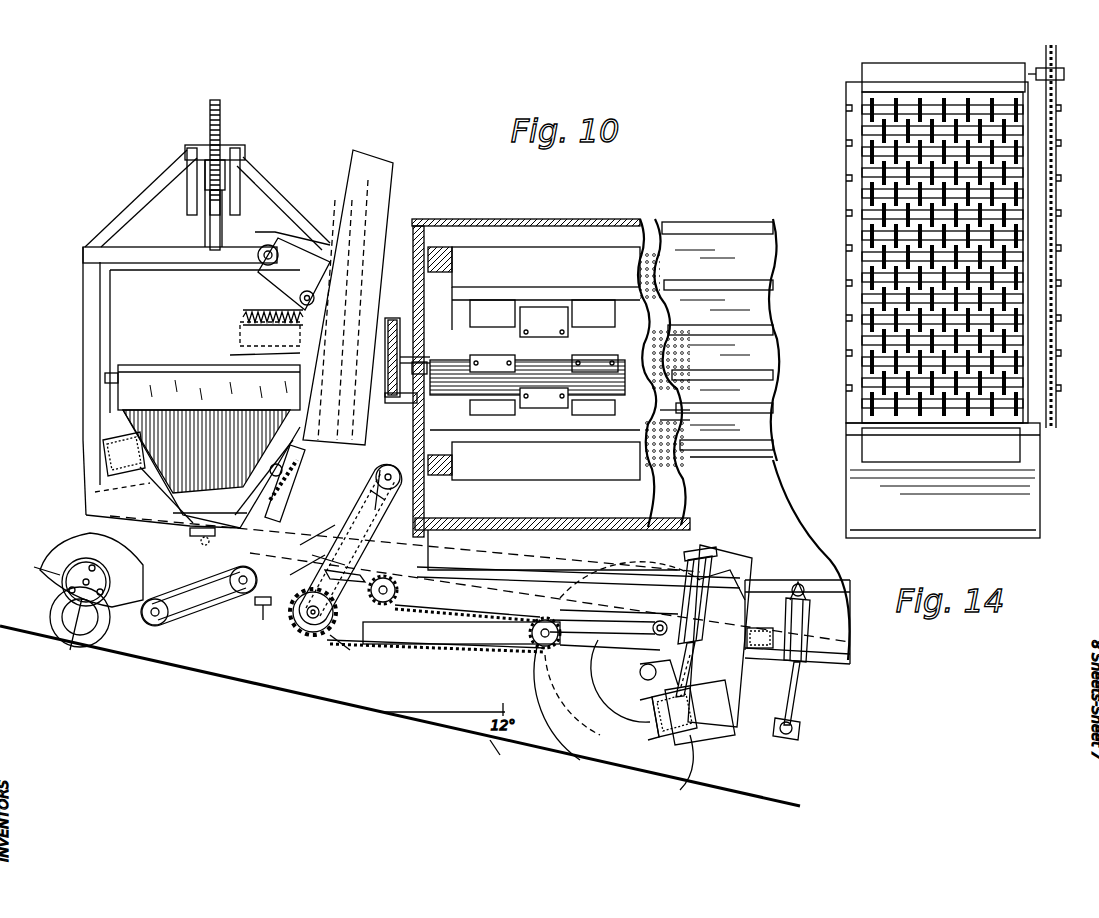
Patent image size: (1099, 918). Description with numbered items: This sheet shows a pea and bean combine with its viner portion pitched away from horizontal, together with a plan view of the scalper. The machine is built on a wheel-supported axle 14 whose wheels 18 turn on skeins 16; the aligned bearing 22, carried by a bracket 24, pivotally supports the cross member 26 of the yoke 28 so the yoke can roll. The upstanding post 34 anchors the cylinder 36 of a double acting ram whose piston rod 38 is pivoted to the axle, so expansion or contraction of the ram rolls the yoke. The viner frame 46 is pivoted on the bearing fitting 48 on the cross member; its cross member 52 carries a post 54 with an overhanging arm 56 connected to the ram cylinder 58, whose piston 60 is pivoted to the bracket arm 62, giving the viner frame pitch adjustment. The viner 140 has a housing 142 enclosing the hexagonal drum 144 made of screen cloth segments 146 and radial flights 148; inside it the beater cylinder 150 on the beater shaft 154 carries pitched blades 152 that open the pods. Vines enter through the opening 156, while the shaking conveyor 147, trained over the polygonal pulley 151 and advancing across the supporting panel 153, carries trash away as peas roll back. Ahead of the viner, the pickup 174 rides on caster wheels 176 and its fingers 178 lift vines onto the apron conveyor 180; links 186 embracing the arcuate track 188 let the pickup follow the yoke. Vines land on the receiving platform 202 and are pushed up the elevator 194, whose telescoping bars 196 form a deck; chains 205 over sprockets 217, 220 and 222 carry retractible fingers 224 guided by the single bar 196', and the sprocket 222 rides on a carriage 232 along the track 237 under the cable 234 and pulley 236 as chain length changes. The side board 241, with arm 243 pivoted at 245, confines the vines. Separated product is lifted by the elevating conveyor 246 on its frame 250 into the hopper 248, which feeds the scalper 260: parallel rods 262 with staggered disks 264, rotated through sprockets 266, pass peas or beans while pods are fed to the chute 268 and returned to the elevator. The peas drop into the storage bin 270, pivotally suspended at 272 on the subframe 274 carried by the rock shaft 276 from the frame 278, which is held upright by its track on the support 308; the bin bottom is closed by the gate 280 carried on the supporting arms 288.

In FIG. 10, the wheel-supported axle 14 is at (660, 737).
In FIG. 10, the skeins 16 is at (645, 675).
In FIG. 10, the wheels 18 is at (540, 684).
In FIG. 10, the aligned bearing 22 is at (725, 690).
In FIG. 10, the bracket 24 is at (715, 750).
In FIG. 10, the cross member 26 is at (700, 740).
In FIG. 10, the yoke 28 is at (108, 499).
In FIG. 10, the upstanding post 34 is at (725, 595).
In FIG. 10, the cylinder 36 is at (688, 590).
In FIG. 10, the piston rod 38 is at (659, 665).
In FIG. 10, the viner frame 46 is at (552, 604).
In FIG. 10, the bearing fitting 48 is at (700, 665).
In FIG. 10, the cross member 52 is at (806, 650).
In FIG. 10, the post 54 is at (775, 635).
In FIG. 10, the overhanging arm 56 is at (775, 580).
In FIG. 10, the ram cylinder 58 is at (804, 610).
In FIG. 10, the piston 60 is at (796, 690).
In FIG. 10, the bracket arm 62 is at (786, 736).
In FIG. 10, the viner 140 is at (760, 470).
In FIG. 10, the housing 142 is at (760, 305).
In FIG. 10, the drum 144 is at (500, 248).
In FIG. 10, the screen cloth segments 146 is at (530, 298).
In FIG. 10, the conveyor 147 is at (585, 518).
In FIG. 10, the radial flights 148 is at (570, 248).
In FIG. 10, the beater cylinder 150 is at (480, 335).
In FIG. 10, the polygonal pulley 151 is at (680, 455).
In FIG. 10, the blades 152 is at (600, 320).
In FIG. 10, the supporting panel 153 is at (612, 526).
In FIG. 10, the beater shaft 154 is at (420, 366).
In FIG. 10, the opening 156 is at (442, 436).
In FIG. 10, the pickup 174 is at (50, 592).
In FIG. 10, the caster wheels 176 is at (66, 630).
In FIG. 10, the fingers 178 is at (90, 560).
In FIG. 10, the apron conveyor 180 is at (170, 600).
In FIG. 10, the links 186 is at (330, 540).
In FIG. 10, the arcuate track 188 is at (340, 520).
In FIG. 10, the elevator 194 is at (272, 460).
In FIG. 10, the bar 196 is at (303, 550).
In FIG. 10, the single bar 196' is at (373, 506).
In FIG. 10, the receiving platform 202 is at (263, 606).
In FIG. 10, the chains 205 is at (340, 645).
In FIG. 10, the sprocket 217 is at (300, 628).
In FIG. 10, the sprocket 220 is at (385, 583).
In FIG. 10, the sprocket 222 is at (540, 620).
In FIG. 10, the retractible fingers 224 is at (312, 555).
In FIG. 10, the carriage 232 is at (568, 648).
In FIG. 10, the cable 234 is at (607, 620).
In FIG. 10, the pulley 236 is at (655, 636).
In FIG. 10, the track 237 is at (398, 632).
In FIG. 10, the side board 241 is at (355, 165).
In FIG. 10, the arm 243 is at (350, 575).
In FIG. 10, the pivot 245 is at (355, 632).
In FIG. 10, the elevating conveyor 246 is at (312, 290).
In FIG. 10, the hopper 248 is at (250, 285).
In FIG. 10, the frame 250 is at (290, 255).
In FIG. 10, the scalper 260 is at (243, 315).
In FIG. 14, the scalper 260 is at (846, 160).
In FIG. 10, the parallel rods 262 is at (243, 325).
In FIG. 14, the parallel rods 262 is at (862, 192).
In FIG. 10, the staggered disks 264 is at (260, 335).
In FIG. 14, the staggered disks 264 is at (862, 212).
In FIG. 14, the sprockets 266 is at (1058, 250).
In FIG. 10, the chute 268 is at (260, 358).
In FIG. 14, the chute 268 is at (1008, 512).
In FIG. 10, the storage bin 270 is at (143, 385).
In FIG. 10, the pivotal suspension 272 is at (105, 378).
In FIG. 10, the subframe 274 is at (100, 333).
In FIG. 10, the rock shaft 276 is at (185, 152).
In FIG. 10, the frame 278 is at (137, 208).
In FIG. 10, the gate 280 is at (206, 492).
In FIG. 10, the supporting arms 288 is at (125, 436).
In FIG. 10, the support 308 is at (392, 318).